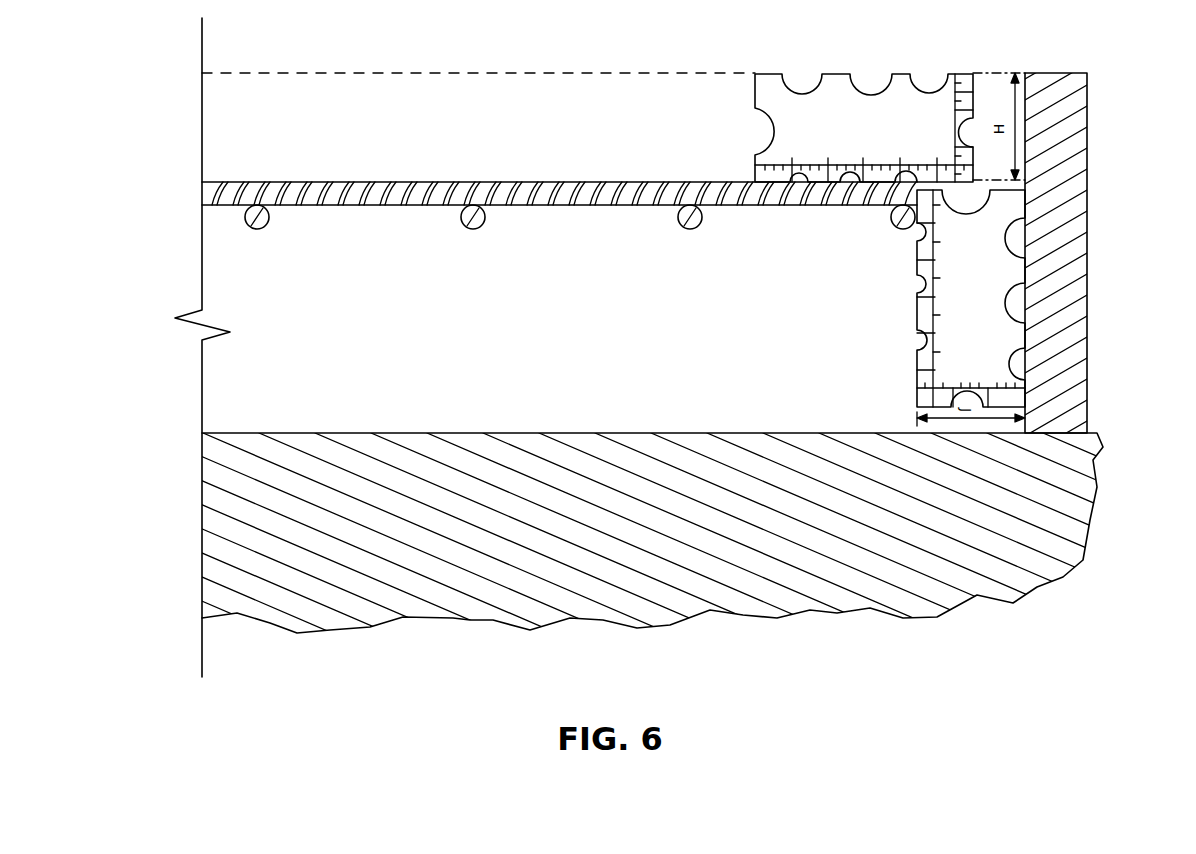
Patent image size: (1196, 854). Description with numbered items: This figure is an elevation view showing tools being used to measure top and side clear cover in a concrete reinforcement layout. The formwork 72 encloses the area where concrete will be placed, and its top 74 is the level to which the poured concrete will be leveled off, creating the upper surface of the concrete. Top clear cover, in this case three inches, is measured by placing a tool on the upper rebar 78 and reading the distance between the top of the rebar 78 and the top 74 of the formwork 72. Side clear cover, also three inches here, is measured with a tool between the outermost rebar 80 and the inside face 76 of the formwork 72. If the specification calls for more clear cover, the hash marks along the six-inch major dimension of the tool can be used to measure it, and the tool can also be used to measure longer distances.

The formwork 72 is at (1088, 226).
The top of the formwork 74 is at (1043, 73).
The inside face of the formwork 76 is at (1025, 372).
The upper rebar 78 is at (535, 182).
The outermost rebar 80 is at (903, 229).